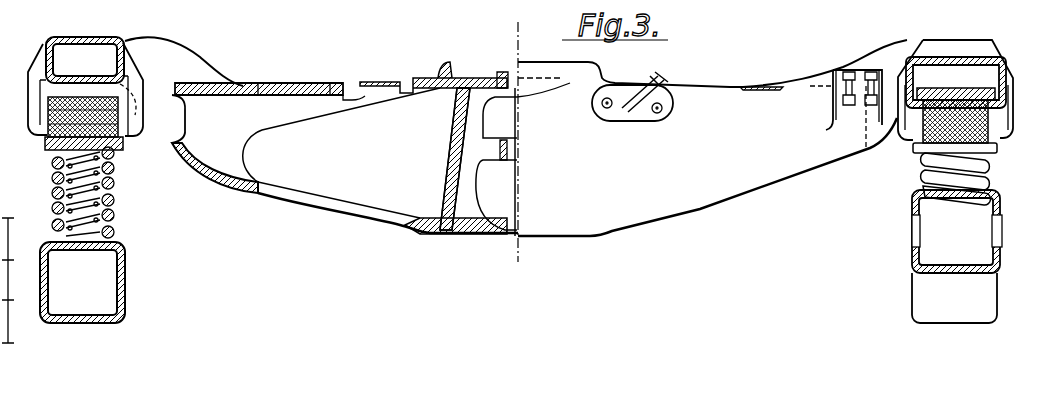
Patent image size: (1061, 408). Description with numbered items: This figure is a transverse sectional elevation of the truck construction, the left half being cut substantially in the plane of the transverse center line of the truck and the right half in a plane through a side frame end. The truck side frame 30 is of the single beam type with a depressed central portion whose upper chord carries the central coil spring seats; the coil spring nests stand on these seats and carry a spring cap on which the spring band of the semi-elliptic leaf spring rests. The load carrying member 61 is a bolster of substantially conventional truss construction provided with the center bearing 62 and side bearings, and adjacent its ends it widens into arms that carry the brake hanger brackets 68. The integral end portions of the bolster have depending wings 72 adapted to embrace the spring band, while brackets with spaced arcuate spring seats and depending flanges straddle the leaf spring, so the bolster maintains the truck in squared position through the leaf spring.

The truck side frame 30 is at (912, 262).
The load carrying member 61 is at (343, 200).
The center bearing 62 is at (456, 82).
The brake hanger bracket 68 is at (832, 96).
The depending wing 72 is at (55, 110).